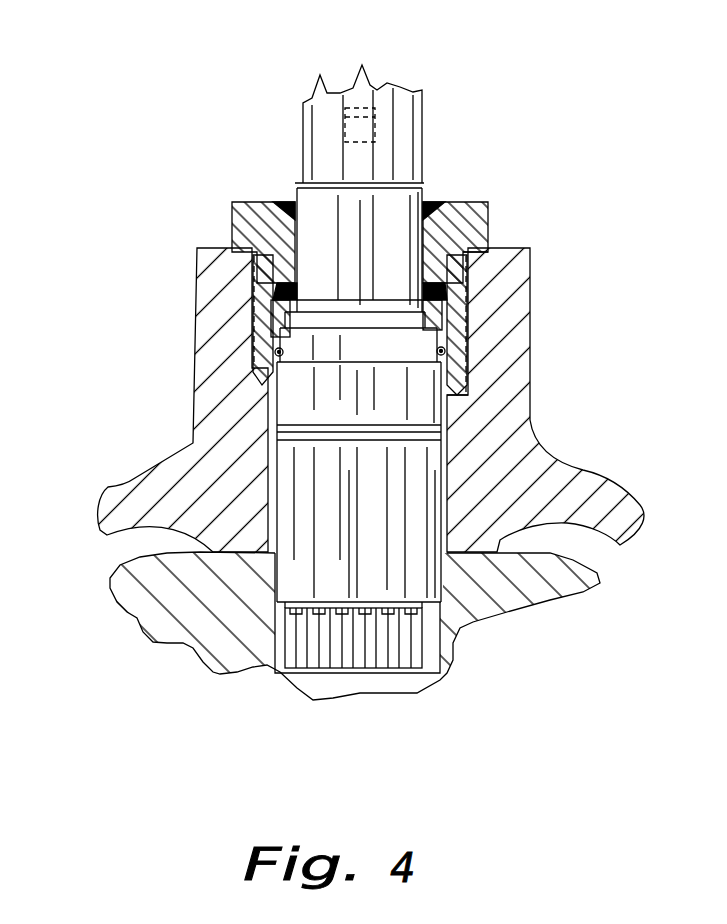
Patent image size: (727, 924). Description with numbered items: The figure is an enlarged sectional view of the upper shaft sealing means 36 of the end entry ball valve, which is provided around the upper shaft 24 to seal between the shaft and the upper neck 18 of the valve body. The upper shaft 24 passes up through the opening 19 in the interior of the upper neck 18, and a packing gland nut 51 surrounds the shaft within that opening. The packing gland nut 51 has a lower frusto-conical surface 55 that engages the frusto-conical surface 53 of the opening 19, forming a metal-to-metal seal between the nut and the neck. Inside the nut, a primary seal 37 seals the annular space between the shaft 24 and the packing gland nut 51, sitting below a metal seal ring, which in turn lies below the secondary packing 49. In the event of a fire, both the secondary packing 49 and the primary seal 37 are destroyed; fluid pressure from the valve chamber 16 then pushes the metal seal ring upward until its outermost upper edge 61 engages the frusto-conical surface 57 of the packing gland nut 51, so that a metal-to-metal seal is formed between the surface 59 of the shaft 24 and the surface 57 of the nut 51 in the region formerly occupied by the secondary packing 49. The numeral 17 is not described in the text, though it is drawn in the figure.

The valve chamber 16 is at (167, 540).
The spacer ring 17 is at (440, 335).
The upper neck 18 is at (193, 386).
The opening 19 is at (298, 432).
The upper shaft 24 is at (232, 230).
The upper shaft sealing means 36 is at (498, 168).
The primary seal 37 is at (445, 351).
The secondary packing 49 is at (487, 249).
The packing gland nut 51 is at (443, 203).
The frusto-conical surface 53 is at (262, 352).
The lower frusto-conical surface 55 is at (452, 388).
The frusto-conical surface 57 is at (327, 290).
The surface 59 is at (450, 265).
The outermost upper edge 61 is at (455, 307).